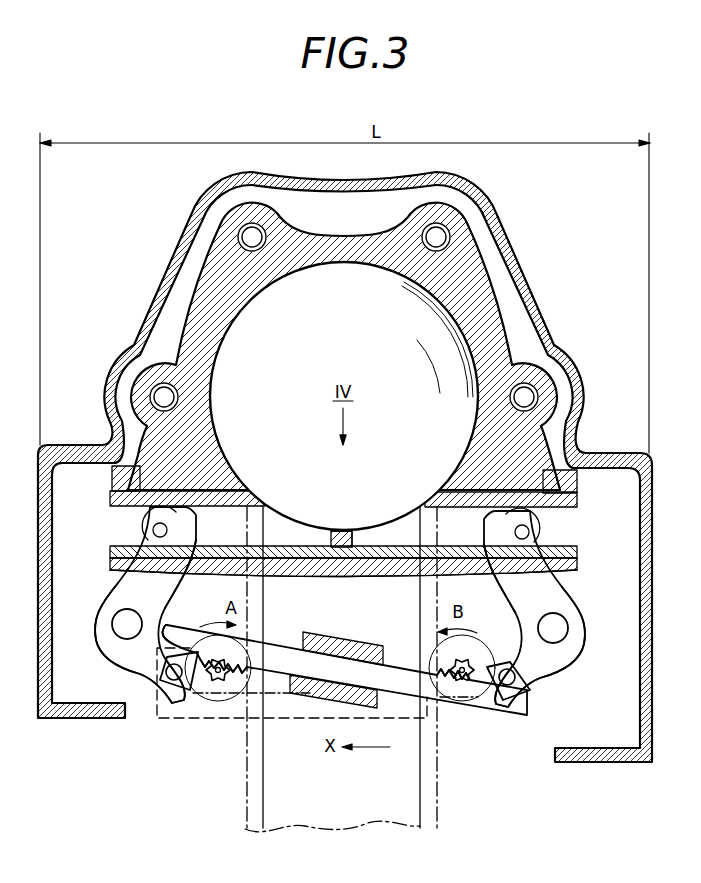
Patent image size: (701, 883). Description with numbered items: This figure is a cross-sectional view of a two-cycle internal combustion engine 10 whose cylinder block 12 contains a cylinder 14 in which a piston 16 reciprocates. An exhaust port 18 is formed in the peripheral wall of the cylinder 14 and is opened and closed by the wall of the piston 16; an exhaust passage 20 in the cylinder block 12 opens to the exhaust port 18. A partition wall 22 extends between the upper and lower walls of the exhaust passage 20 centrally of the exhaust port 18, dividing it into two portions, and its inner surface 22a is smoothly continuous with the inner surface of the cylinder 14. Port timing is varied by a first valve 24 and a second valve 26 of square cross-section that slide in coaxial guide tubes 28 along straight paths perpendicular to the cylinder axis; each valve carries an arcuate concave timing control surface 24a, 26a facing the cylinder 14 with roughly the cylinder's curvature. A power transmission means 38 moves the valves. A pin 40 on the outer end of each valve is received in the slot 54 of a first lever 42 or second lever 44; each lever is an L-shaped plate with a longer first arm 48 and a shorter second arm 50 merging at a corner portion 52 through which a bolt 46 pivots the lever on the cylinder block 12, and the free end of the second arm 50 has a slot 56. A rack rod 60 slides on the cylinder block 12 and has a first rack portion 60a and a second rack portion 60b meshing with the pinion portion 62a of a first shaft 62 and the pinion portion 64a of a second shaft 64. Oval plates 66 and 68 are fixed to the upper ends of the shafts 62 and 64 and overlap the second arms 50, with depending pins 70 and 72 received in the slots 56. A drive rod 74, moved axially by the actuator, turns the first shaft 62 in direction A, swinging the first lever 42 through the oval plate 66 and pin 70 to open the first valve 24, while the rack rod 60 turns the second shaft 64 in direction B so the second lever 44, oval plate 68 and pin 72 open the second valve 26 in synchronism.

The two-cycle internal combustion engine 10 is at (542, 283).
The cylinder block 12 is at (208, 312).
The cylinder 14 is at (268, 286).
The piston 16 is at (363, 283).
The exhaust port 18 is at (370, 530).
The exhaust passage 20 is at (420, 769).
The partition wall 22 is at (317, 530).
The inner surface 22a is at (340, 532).
The first valve 24 is at (247, 527).
The timing control surface 24a is at (289, 527).
The second valve 26 is at (437, 518).
The timing control surface 26a is at (397, 520).
The guide tube 28 is at (110, 490).
The power transmission means 38 is at (440, 784).
The pin 40 is at (140, 529).
The first lever 42 is at (125, 590).
The second lever 44 is at (560, 594).
The bolt 46 is at (120, 620).
The first arm 48 is at (153, 590).
The second arm 50 is at (140, 668).
The corner portion 52 is at (108, 641).
The slot 54 is at (176, 520).
The slot 56 is at (182, 698).
The rack rod 60 is at (305, 650).
The first rack portion 60a is at (205, 683).
The second rack portion 60b is at (452, 672).
The first shaft 62 is at (218, 675).
The pinion portion 62a is at (230, 683).
The second shaft 64 is at (455, 652).
The pinion portion 64a is at (449, 690).
The first oval plate 66 is at (200, 643).
The second oval plate 68 is at (467, 697).
The pin 70 is at (160, 690).
The pin 72 is at (528, 702).
The drive rod 74 is at (293, 720).